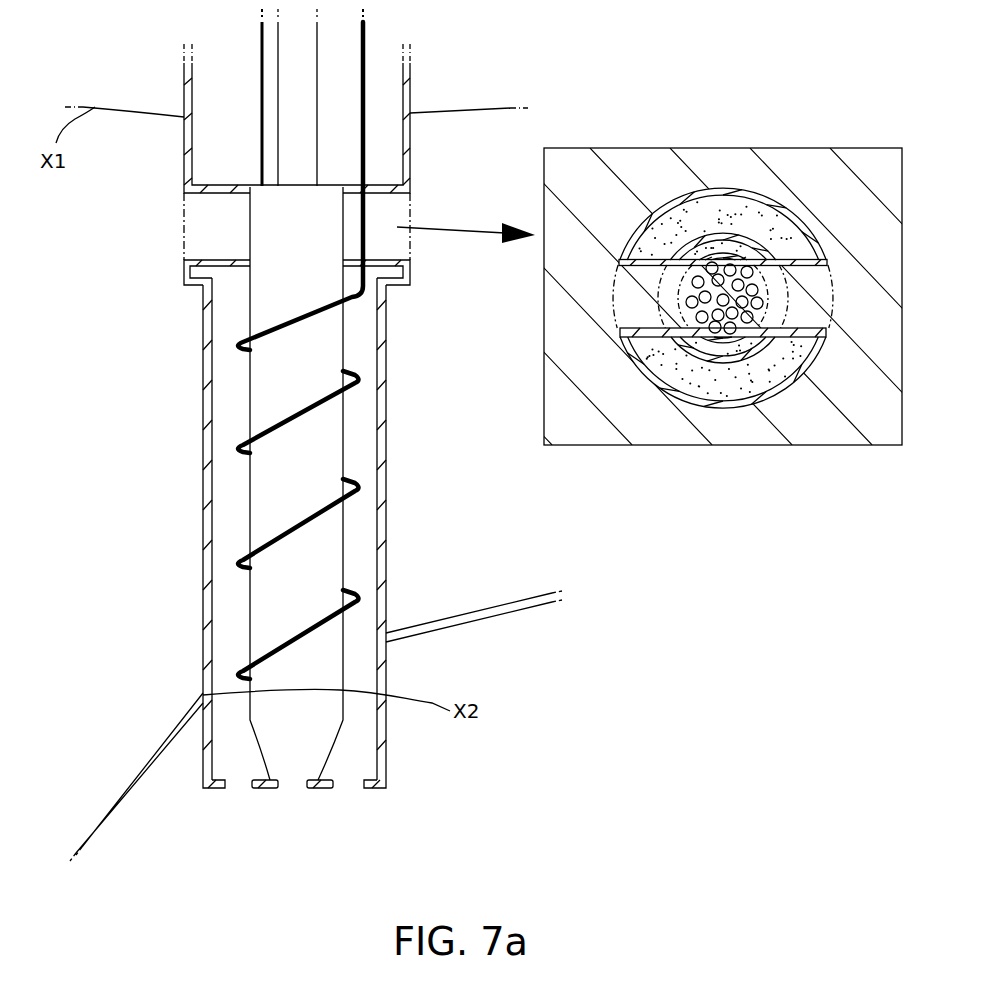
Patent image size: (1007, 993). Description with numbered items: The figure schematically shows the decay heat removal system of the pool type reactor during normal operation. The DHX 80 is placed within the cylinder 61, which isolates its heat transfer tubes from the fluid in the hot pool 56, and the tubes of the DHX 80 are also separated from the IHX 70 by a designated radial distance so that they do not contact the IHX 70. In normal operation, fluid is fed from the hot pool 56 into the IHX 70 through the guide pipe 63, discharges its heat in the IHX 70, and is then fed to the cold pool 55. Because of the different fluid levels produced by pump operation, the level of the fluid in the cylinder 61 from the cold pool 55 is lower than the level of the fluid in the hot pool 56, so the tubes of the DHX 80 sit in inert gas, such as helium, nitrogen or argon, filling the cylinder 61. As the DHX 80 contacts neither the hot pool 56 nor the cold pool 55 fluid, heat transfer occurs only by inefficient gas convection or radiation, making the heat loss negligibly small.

The cold pool 55 is at (203, 849).
The hot pool 56 is at (98, 356).
The cylinder 61 is at (208, 661).
The guide pipe 63 is at (215, 236).
The IHX 70 is at (262, 494).
The DHX 80 is at (237, 567).